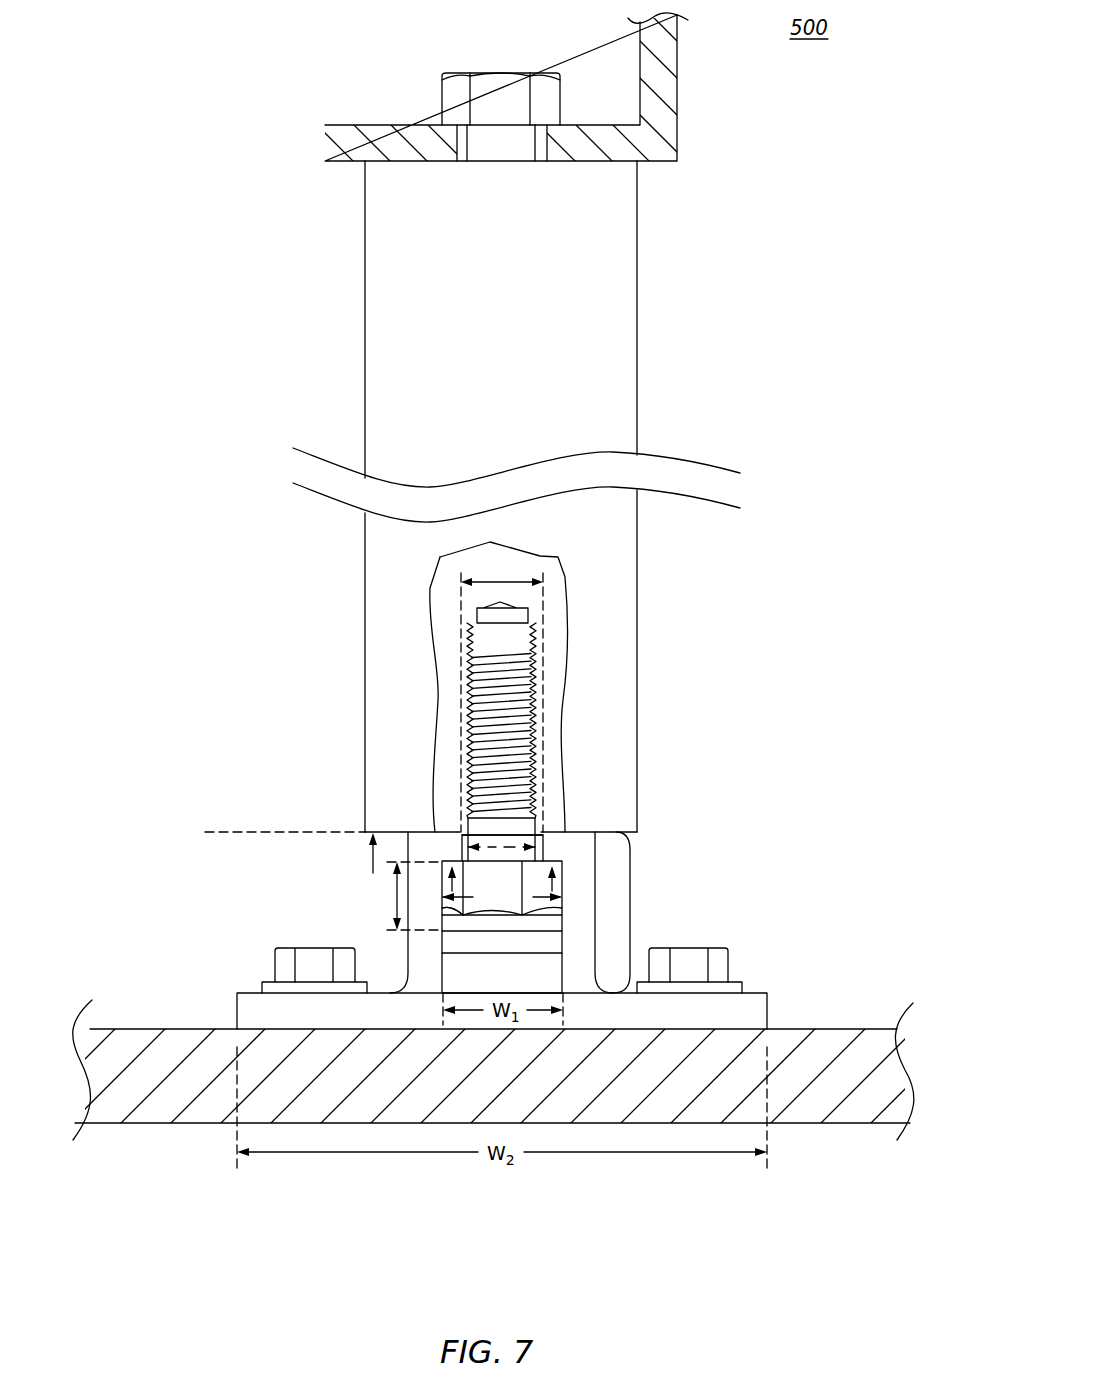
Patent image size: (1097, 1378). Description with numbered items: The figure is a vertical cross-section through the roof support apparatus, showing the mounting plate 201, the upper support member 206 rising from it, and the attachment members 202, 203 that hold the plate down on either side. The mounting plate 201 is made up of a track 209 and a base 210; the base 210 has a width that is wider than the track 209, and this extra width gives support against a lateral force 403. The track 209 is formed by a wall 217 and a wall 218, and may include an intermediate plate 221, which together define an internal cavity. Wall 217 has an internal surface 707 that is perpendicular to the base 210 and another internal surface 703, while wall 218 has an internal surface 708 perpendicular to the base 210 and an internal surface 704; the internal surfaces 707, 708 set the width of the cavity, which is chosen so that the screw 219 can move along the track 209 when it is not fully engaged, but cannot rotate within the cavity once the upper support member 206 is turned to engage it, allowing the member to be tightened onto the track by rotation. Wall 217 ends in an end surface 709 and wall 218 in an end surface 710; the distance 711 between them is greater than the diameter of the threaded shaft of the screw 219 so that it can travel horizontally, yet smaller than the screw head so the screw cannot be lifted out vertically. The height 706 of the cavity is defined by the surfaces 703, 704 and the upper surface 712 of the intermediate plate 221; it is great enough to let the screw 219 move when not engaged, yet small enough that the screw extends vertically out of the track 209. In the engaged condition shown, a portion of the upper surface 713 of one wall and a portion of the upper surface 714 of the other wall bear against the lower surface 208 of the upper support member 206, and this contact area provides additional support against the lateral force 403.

The lateral force 403 is at (348, 172).
The upper support member 206 is at (612, 255).
The distance 711 is at (498, 578).
The screw 219 is at (490, 687).
The upper surface 713 is at (415, 822).
The upper surface 714 is at (587, 822).
The end surface 710 is at (545, 836).
The end surface 709 is at (462, 840).
The internal surface 704 is at (560, 883).
The internal surface 703 is at (447, 886).
The internal surface 707 is at (468, 897).
The lower surface 208 is at (372, 857).
The wall 217 is at (422, 898).
The height 706 is at (393, 908).
The internal surface 708 is at (562, 906).
The upper surface 712 is at (502, 926).
The intermediate plate 221 is at (552, 940).
The wall 218 is at (583, 900).
The track 209 is at (632, 898).
The mounting plate 201 is at (210, 830).
The attachment member 202 is at (310, 962).
The attachment member 203 is at (715, 965).
The base 210 is at (767, 1172).